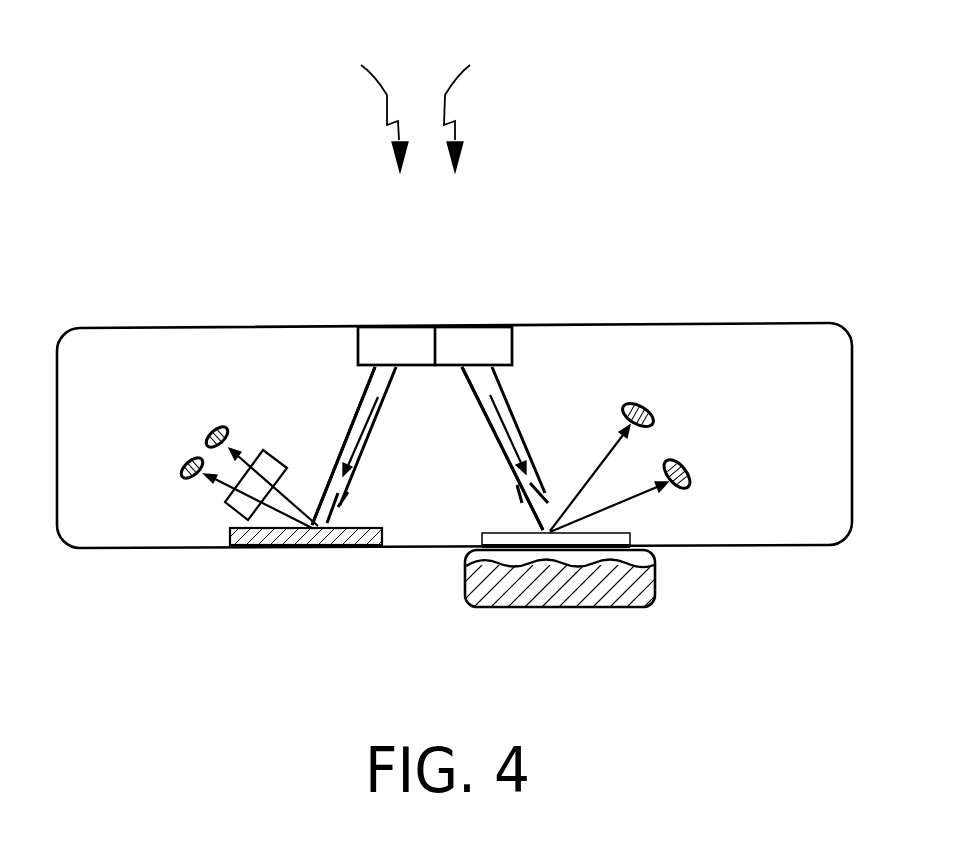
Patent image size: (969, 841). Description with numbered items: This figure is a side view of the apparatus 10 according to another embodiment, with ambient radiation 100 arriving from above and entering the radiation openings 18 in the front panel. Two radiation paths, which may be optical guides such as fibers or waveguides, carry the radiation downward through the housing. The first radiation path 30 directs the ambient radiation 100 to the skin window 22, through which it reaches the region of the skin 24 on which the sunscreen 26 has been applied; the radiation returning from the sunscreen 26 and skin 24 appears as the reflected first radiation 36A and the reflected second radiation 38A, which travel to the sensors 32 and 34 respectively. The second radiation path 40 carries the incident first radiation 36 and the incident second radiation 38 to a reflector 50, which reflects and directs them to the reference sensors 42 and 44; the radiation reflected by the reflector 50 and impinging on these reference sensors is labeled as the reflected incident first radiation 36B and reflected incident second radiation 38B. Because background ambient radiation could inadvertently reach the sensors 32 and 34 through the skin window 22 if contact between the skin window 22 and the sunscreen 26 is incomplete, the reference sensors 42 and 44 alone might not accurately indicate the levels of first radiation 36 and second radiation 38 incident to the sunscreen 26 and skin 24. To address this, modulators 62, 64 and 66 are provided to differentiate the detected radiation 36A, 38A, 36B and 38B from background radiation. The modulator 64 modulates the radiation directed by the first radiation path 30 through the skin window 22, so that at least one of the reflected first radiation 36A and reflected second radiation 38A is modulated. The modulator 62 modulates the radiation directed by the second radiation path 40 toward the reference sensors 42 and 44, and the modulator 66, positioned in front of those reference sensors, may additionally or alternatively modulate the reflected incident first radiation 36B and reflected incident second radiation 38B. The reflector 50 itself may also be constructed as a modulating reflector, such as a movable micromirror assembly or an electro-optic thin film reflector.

The apparatus 10 is at (131, 108).
The ambient radiation 100 is at (416, 110).
The radiation opening 18 is at (460, 310).
The modulator 62 is at (381, 336).
The modulator 64 is at (490, 336).
The second radiation path 40 is at (367, 400).
The first radiation path 30 is at (522, 437).
The first radiation 36 is at (376, 395).
The second radiation 38 is at (495, 397).
The reflected first radiation 36A is at (602, 455).
The reflected second radiation 38A is at (638, 497).
The reflected incident first radiation 36B is at (297, 497).
The reflected incident second radiation 38B is at (232, 547).
The sensor 32 is at (643, 407).
The sensor 34 is at (682, 463).
The reference sensor 42 is at (217, 423).
The reference sensor 44 is at (192, 457).
The modulator 66 is at (230, 509).
The reflector 50 is at (283, 547).
The skin window 22 is at (480, 537).
The skin 24 is at (582, 588).
The sunscreen 26 is at (637, 553).